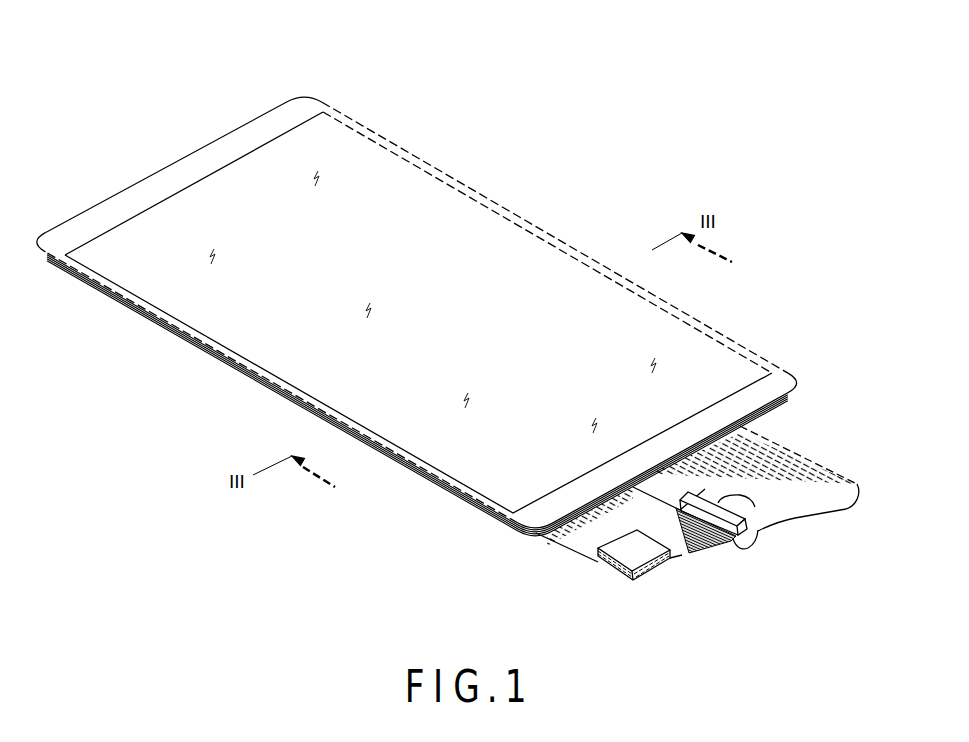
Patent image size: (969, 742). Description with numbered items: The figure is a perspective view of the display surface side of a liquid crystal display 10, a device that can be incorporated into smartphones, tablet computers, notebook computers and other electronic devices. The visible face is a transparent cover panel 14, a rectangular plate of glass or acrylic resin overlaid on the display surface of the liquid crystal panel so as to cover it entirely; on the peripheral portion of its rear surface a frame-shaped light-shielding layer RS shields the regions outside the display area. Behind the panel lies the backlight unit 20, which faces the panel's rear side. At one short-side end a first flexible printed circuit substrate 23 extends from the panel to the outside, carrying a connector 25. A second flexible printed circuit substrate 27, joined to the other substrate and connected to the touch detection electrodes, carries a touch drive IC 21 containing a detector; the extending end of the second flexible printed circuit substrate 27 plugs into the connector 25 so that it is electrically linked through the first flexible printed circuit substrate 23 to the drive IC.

The liquid crystal display 10 is at (407, 97).
The light-shielding layer RS is at (80, 216).
The cover panel 14 is at (437, 207).
The backlight unit 20 is at (425, 492).
The touch drive IC 21 is at (641, 557).
The first flexible printed circuit substrate 23 is at (781, 487).
The connector 25 is at (755, 510).
The second flexible printed circuit substrate 27 is at (585, 537).